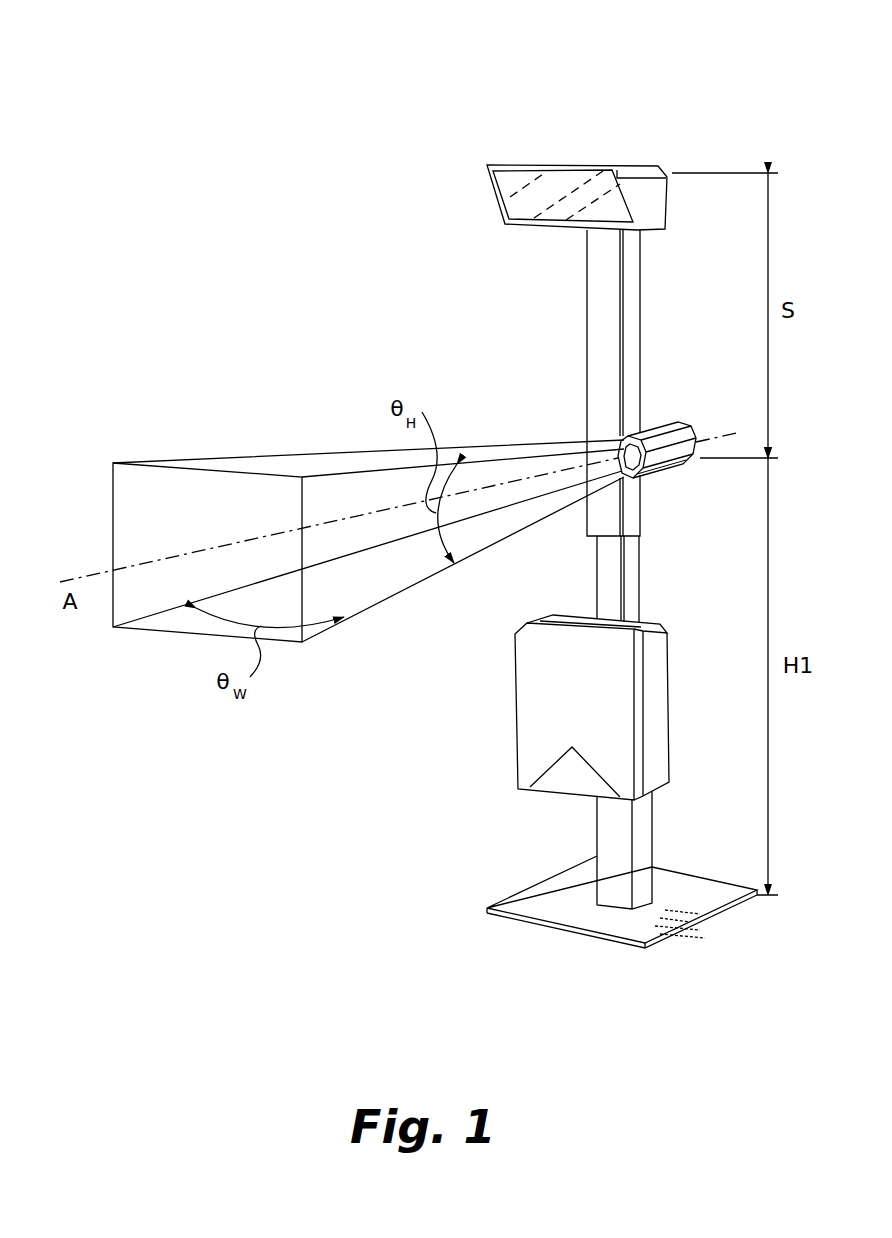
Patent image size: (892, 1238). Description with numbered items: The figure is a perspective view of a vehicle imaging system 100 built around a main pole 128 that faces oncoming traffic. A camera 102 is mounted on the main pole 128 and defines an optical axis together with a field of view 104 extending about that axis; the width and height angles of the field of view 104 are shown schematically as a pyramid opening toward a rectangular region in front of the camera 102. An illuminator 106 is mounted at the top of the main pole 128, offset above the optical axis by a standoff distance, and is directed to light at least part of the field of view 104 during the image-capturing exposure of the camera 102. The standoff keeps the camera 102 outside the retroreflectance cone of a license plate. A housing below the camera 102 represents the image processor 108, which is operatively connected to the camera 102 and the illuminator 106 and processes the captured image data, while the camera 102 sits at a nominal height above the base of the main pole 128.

The system 100 is at (366, 204).
The camera 102 is at (684, 416).
The field of view 104 is at (106, 484).
The illuminator 106 is at (481, 158).
The image processor 108 is at (674, 695).
The main pole 128 is at (645, 833).